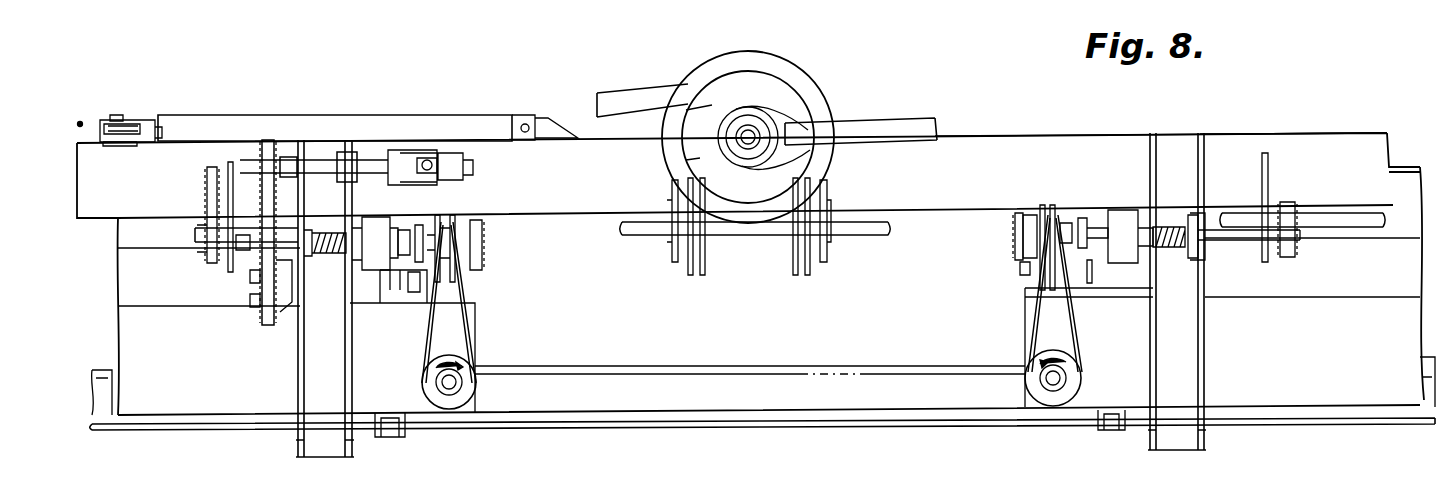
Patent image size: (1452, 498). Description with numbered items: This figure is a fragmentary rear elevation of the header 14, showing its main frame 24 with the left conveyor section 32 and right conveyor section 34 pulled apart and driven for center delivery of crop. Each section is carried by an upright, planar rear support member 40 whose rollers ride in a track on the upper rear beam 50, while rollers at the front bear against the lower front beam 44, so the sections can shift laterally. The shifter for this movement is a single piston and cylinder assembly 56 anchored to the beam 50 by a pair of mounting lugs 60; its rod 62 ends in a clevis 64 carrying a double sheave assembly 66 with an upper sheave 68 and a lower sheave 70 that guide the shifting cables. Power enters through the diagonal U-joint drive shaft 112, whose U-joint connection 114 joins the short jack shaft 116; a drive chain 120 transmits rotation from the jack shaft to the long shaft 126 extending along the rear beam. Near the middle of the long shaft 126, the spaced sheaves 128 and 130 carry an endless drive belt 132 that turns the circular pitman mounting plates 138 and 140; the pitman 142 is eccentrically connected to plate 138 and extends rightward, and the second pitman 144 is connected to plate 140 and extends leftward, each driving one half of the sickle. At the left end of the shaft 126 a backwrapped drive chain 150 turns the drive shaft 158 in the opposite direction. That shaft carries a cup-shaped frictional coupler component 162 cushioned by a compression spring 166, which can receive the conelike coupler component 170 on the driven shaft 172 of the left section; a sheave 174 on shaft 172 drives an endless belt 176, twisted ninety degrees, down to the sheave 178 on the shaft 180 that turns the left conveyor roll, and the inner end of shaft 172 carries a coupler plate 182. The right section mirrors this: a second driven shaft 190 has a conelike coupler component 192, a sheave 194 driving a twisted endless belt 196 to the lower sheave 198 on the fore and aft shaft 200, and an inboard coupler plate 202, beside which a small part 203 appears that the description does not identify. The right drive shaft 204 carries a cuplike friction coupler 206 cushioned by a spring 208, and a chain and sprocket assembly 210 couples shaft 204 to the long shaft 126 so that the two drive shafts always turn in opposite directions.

The header 14 is at (1284, 107).
The main frame 24 is at (355, 460).
The left conveyor section 32 is at (184, 418).
The right conveyor section 34 is at (1288, 408).
The rear support member 40 is at (122, 330).
The lower front beam 44 is at (712, 373).
The upper rear beam 50 is at (1010, 136).
The piston and cylinder assembly 56 is at (310, 110).
The mounting lugs 60 is at (535, 116).
The rod 62 is at (162, 127).
The clevis 64 is at (148, 118).
The double sheave assembly 66 is at (80, 124).
The upper sheave 68 is at (114, 115).
The lower sheave 70 is at (94, 146).
The U-joint drive shaft 112 is at (470, 162).
The U-joint connection 114 is at (418, 147).
The jack shaft 116 is at (375, 153).
The drive chain 120 is at (258, 318).
The long shaft 126 is at (880, 228).
The sheave 128 is at (678, 270).
The sheave 130 is at (810, 274).
The endless drive belt 132 is at (795, 278).
The pitman mounting plate 138 is at (793, 84).
The pitman mounting plate 140 is at (788, 50).
The pitman 142 is at (905, 118).
The second pitman 144 is at (628, 100).
The drive chain 150 is at (206, 205).
The drive shaft 158 is at (250, 250).
The cup-shaped frictional coupler component 162 is at (376, 222).
The compression spring 166 is at (328, 236).
The conelike coupler component 170 is at (396, 298).
The driven shaft 172 is at (420, 298).
The sheave 174 is at (437, 218).
The endless belt 176 is at (470, 340).
The sheave 178 is at (430, 386).
The shaft 180 is at (458, 392).
The coupler plate 182 is at (486, 260).
The second driven shaft 190 is at (1072, 224).
The conelike coupler component 192 is at (1093, 283).
The sheave 194 is at (1053, 210).
The twisted endless belt 196 is at (1074, 334).
The lower sheave 198 is at (1052, 404).
The fore and aft shaft 200 is at (1060, 380).
The coupler plate 202 is at (1010, 232).
The flange 203 is at (1018, 248).
The drive shaft 204 is at (1242, 244).
The cuplike friction coupler 206 is at (1122, 215).
The spring 208 is at (1170, 228).
The chain and sprocket assembly 210 is at (1292, 252).